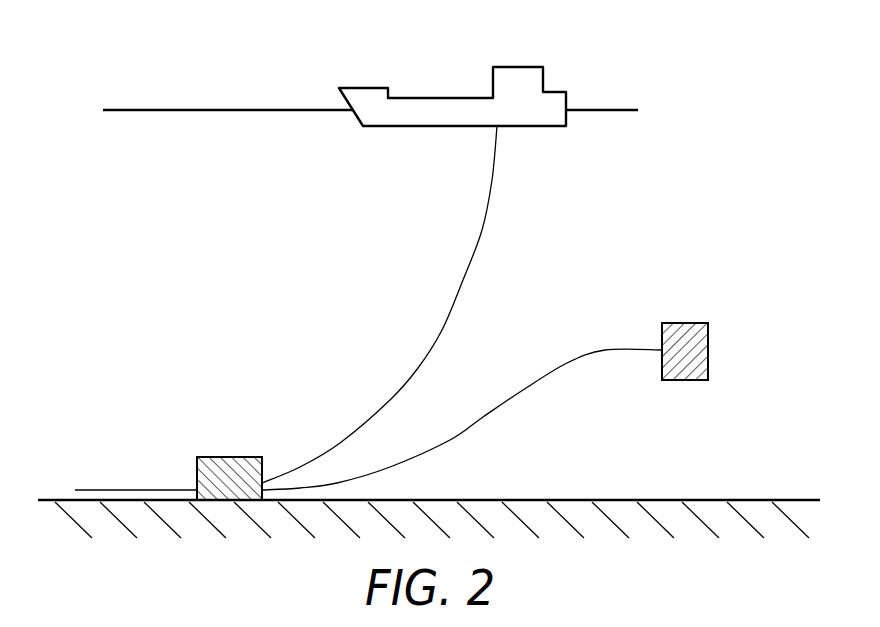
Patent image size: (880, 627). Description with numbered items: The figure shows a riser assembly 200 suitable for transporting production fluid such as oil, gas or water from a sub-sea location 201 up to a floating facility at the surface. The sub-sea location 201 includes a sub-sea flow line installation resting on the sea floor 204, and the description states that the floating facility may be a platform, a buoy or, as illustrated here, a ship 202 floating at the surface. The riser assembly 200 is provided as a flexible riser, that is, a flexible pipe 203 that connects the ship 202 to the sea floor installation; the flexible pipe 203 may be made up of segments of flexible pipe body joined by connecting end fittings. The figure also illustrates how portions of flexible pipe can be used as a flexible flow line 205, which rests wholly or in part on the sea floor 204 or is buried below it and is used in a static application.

The riser assembly 200 is at (706, 198).
The sub-sea location 201 is at (226, 457).
The surface vessel 202 is at (362, 88).
The flexible pipe 203 is at (453, 312).
The sea floor 204 is at (766, 500).
The flexible flow line 205 is at (119, 490).